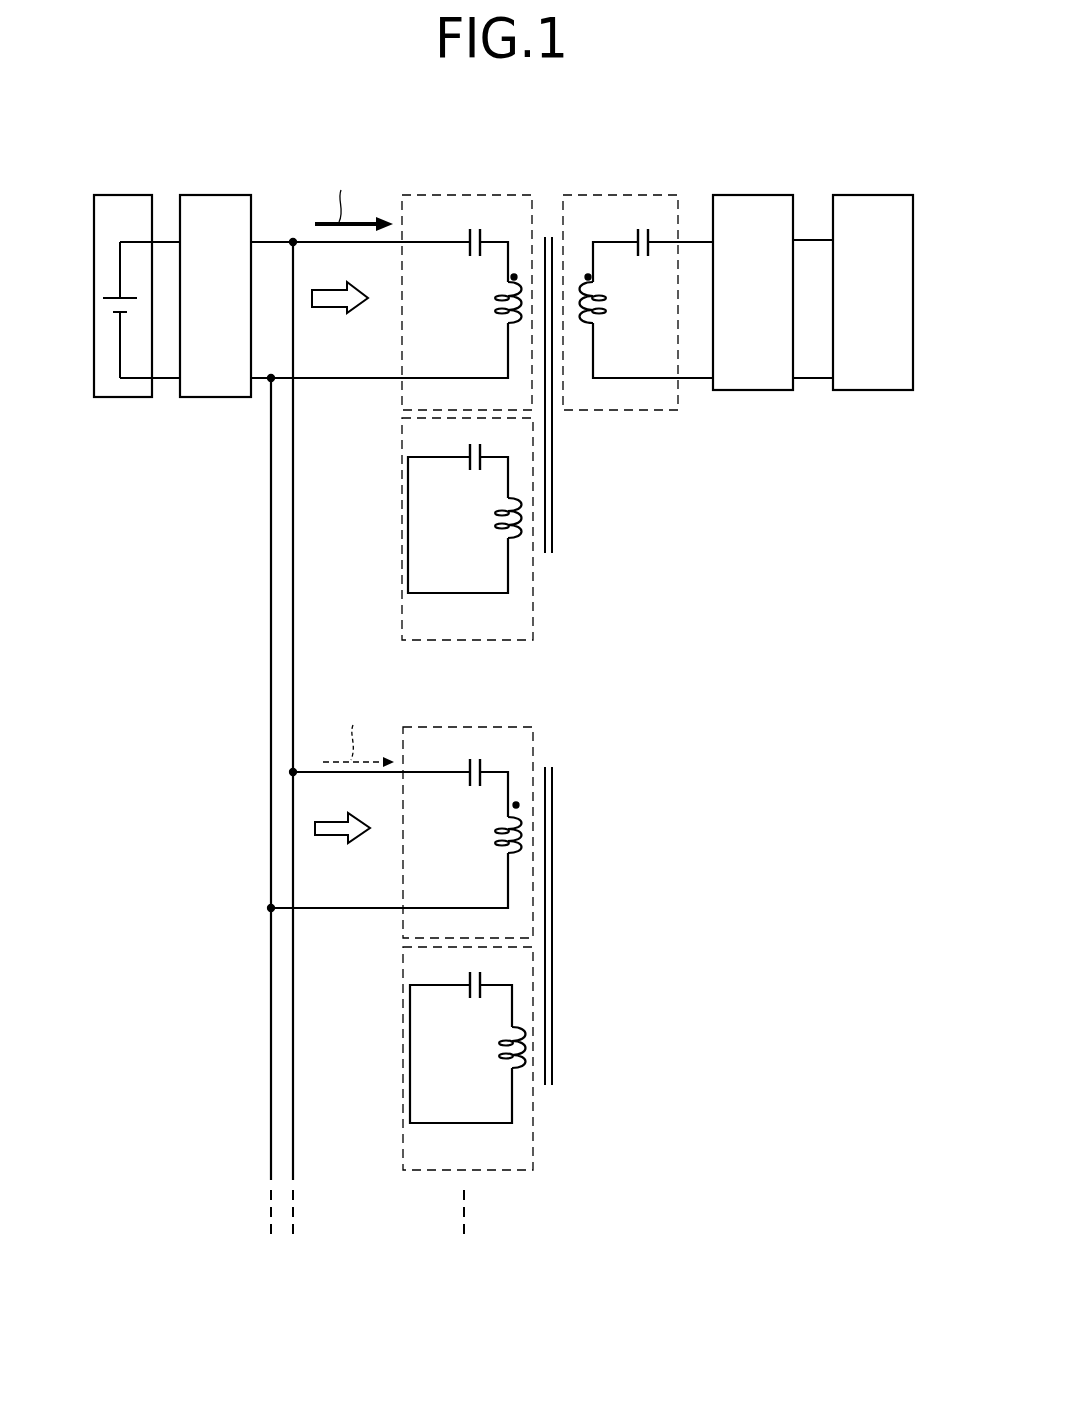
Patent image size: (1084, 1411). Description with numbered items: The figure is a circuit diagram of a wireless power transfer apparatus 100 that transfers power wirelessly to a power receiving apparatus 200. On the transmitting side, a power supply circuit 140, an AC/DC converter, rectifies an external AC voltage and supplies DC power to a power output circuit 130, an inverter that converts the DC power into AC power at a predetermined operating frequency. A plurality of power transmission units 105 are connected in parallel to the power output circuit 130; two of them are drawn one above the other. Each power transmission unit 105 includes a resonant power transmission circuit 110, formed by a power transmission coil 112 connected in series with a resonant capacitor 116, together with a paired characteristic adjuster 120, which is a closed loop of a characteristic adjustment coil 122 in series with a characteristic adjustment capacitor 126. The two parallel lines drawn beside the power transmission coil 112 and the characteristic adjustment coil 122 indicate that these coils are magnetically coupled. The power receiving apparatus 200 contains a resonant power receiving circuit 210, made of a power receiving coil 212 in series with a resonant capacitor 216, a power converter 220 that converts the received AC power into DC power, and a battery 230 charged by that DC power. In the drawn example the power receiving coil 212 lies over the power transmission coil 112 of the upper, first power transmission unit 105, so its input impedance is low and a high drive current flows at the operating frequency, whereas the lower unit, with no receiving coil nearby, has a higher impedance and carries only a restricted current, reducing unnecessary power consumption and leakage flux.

The wireless power transfer apparatus 100 is at (159, 116).
The power receiving apparatus 200 is at (828, 117).
The power supply circuit 140 is at (121, 195).
The power output circuit 130 is at (222, 195).
The resonant power transmission circuit 110 is at (473, 195).
The resonant capacitor 116 is at (465, 232).
The power transmission coil 112 is at (502, 311).
The characteristic adjuster 120 is at (403, 435).
The characteristic adjustment capacitor 126 is at (468, 453).
The characteristic adjustment coil 122 is at (518, 497).
The power transmission unit 105 is at (389, 562).
The resonant power receiving circuit 210 is at (619, 195).
The resonant capacitor 216 is at (635, 232).
The power receiving coil 212 is at (600, 312).
The power converter 220 is at (752, 195).
The battery 230 is at (876, 195).